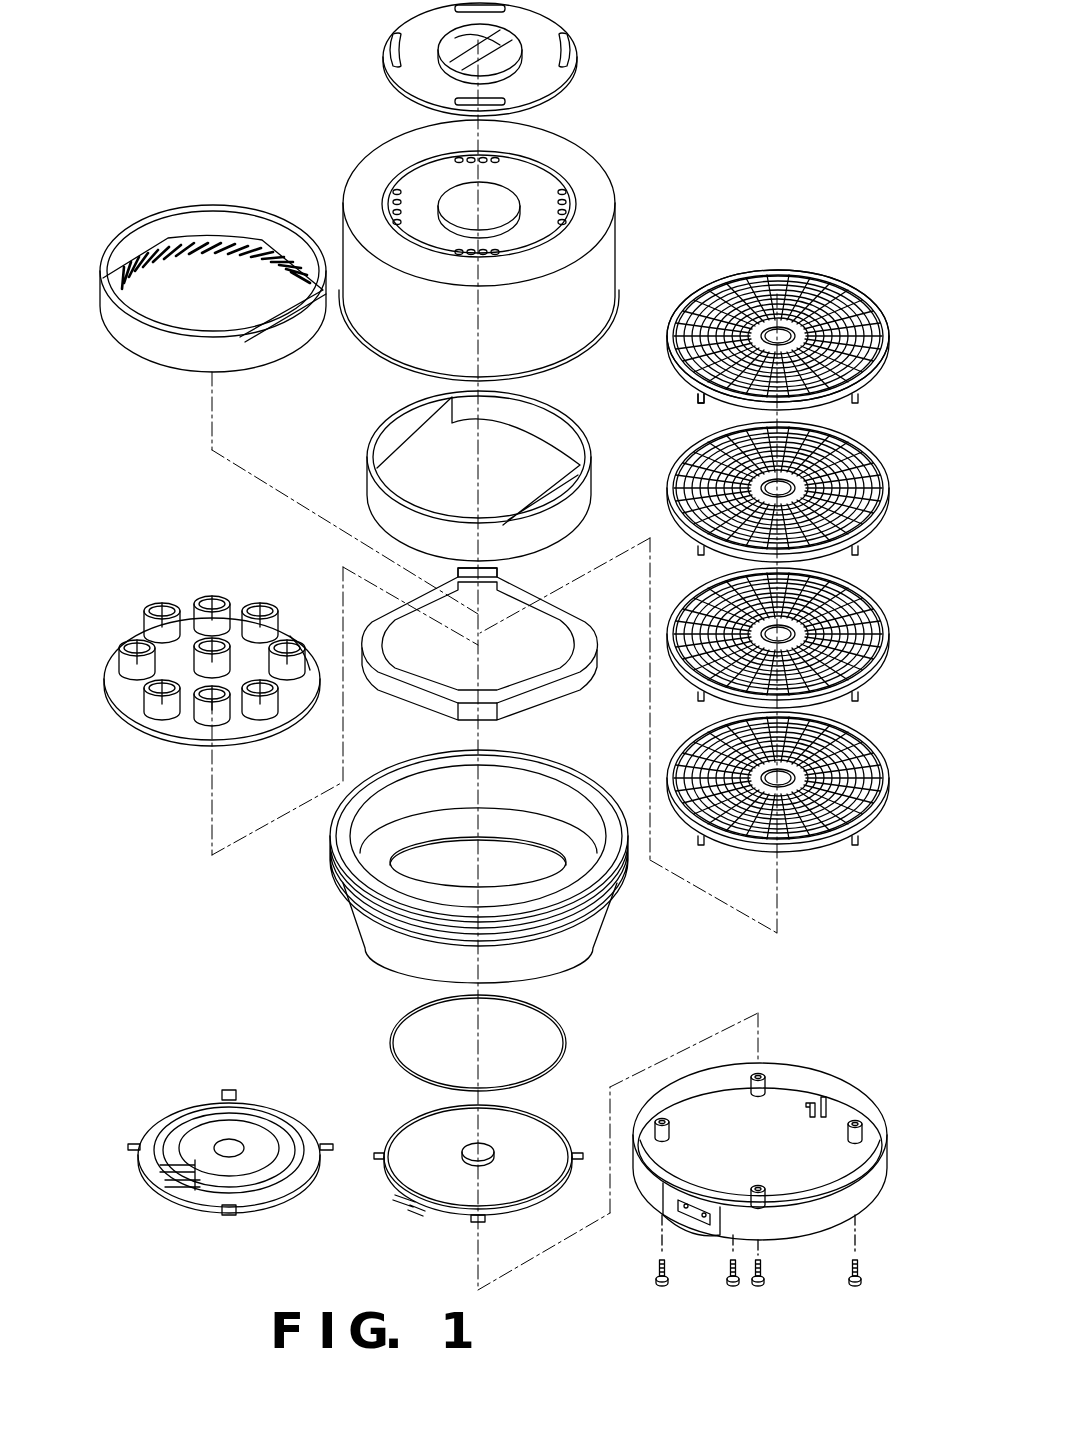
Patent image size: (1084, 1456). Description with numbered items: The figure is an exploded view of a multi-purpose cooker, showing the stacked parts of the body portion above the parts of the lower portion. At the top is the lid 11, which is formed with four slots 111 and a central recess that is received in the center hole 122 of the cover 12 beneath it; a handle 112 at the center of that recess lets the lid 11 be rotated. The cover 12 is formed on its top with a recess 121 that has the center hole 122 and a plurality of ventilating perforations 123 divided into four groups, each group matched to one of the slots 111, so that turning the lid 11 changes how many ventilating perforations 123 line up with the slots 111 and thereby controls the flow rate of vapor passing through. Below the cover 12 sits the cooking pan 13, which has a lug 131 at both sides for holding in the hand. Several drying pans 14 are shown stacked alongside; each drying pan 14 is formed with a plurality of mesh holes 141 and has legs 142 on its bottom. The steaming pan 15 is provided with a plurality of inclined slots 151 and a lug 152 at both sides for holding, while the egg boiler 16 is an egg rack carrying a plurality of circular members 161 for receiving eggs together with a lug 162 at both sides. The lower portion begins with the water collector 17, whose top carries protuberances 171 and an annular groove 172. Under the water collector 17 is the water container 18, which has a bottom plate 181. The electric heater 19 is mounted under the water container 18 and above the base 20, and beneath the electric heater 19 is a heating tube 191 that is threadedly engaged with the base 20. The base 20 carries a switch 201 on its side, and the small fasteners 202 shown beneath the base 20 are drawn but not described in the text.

The lid 11 is at (471, 59).
The slots 111 is at (395, 50).
The handle 112 is at (478, 50).
The cover 12 is at (476, 237).
The recess 121 is at (433, 172).
The center hole 122 is at (495, 207).
The ventilating perforations 123 is at (562, 190).
The cooking pan 13 is at (475, 469).
The lug 131 is at (406, 412).
The drying pan 14 is at (759, 542).
The mesh holes 141 is at (690, 292).
The legs 142 is at (682, 377).
The steaming pan 15 is at (213, 278).
The inclined slots 151 is at (272, 256).
The lug 152 is at (142, 225).
The egg boiler 16 is at (213, 659).
The circular members 161 is at (163, 612).
The lug 162 is at (293, 640).
The water collector 17 is at (504, 652).
The protuberances 171 is at (510, 572).
The annular groove 172 is at (585, 648).
The water container 18 is at (577, 952).
The bottom plate 181 is at (560, 1060).
The electric heater 19 is at (306, 1188).
The heating tube 191 is at (205, 1186).
The base 20 is at (746, 1176).
The switch 201 is at (690, 1212).
The screws 202 is at (764, 1275).